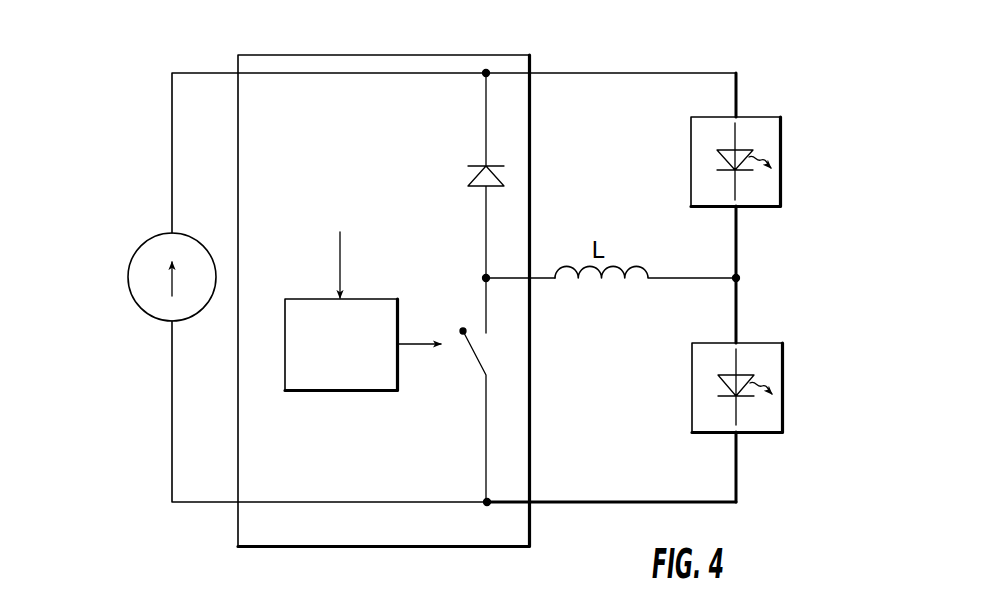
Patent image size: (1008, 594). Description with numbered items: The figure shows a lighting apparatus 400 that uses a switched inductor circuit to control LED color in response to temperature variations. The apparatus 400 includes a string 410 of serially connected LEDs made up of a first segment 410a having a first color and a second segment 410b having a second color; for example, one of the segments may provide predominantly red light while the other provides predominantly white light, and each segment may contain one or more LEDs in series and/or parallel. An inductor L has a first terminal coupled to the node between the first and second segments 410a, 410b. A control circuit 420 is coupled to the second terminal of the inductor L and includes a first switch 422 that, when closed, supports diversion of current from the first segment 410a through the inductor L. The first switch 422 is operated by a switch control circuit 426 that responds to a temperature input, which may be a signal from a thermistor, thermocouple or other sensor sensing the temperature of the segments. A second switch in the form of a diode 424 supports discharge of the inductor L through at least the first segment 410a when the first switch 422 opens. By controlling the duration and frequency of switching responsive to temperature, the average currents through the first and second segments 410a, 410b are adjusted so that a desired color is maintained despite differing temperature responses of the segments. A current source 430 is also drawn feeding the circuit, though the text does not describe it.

The lighting apparatus 400 is at (121, 92).
The string of serially connected LEDs 410 is at (777, 251).
The first segment 410a is at (780, 148).
The second segment 410b is at (782, 375).
The control circuit 420 is at (425, 55).
The first switch 422 is at (461, 369).
The diode 424 is at (455, 180).
The switch control circuit 426 is at (360, 299).
The current source 430 is at (131, 258).